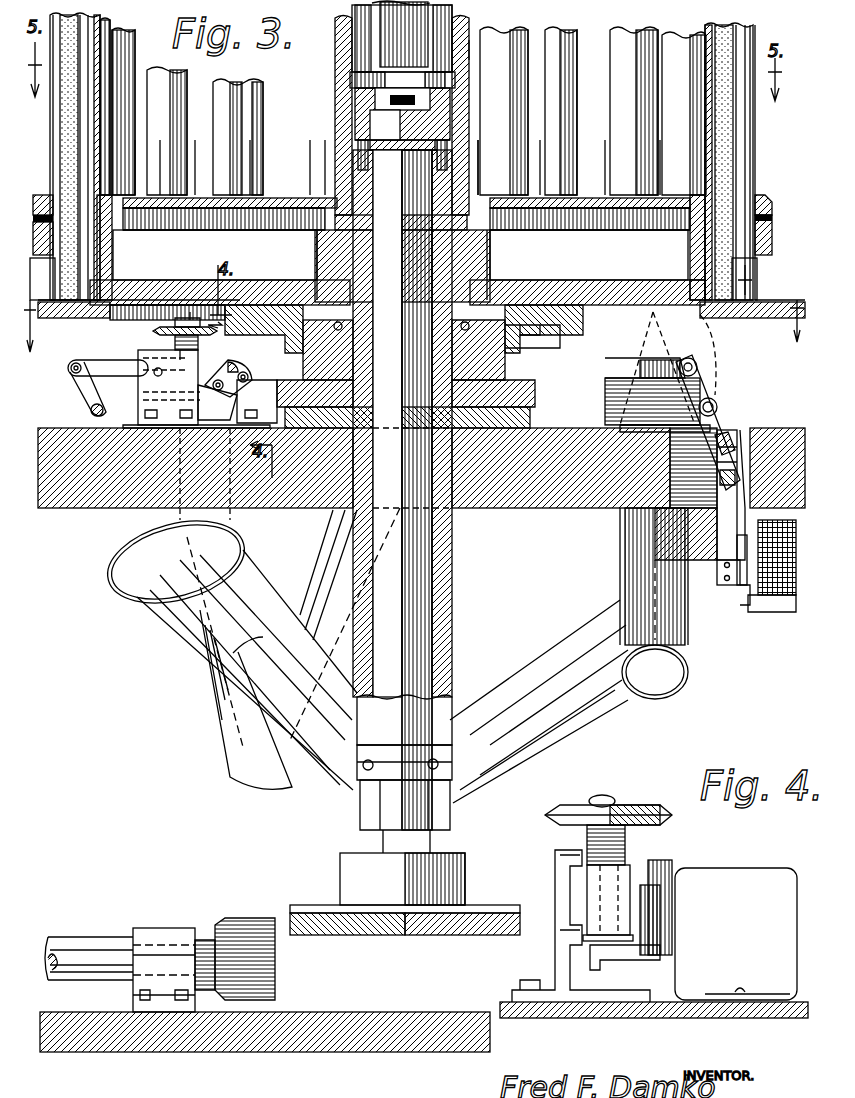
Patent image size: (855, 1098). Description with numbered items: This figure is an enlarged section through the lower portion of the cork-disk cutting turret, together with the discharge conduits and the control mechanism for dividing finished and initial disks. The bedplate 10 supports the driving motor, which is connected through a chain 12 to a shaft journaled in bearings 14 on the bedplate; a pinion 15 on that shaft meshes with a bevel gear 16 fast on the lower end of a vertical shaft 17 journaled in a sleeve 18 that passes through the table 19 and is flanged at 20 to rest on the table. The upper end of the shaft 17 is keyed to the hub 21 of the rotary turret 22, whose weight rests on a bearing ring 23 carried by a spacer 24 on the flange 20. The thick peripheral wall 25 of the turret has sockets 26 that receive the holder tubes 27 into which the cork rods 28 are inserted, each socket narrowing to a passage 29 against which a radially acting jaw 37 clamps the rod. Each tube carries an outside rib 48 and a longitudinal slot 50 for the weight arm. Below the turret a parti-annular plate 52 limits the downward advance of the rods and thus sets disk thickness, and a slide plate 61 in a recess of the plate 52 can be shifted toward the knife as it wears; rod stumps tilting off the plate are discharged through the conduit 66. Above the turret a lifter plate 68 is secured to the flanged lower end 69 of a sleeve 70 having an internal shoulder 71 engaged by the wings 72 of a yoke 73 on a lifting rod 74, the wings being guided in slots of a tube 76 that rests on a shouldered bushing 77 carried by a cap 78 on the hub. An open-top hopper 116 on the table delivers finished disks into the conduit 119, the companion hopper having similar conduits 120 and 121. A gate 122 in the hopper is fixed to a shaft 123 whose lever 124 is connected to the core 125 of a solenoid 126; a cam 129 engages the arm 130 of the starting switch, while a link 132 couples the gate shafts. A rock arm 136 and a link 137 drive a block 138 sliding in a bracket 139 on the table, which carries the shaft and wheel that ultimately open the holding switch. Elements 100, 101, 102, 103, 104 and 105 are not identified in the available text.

In FIG. 3, the bedplate 10 is at (236, 1050).
In FIG. 3, the chain 12 is at (419, 326).
In FIG. 3, the bearings 14 is at (138, 1002).
In FIG. 3, the pinion 15 is at (275, 965).
In FIG. 3, the bevel gear 16 is at (378, 935).
In FIG. 3, the vertical shaft 17 is at (430, 625).
In FIG. 3, the sleeve 18 is at (452, 554).
In FIG. 3, the table 19 is at (527, 495).
In FIG. 4, the table 19 is at (575, 1008).
In FIG. 3, the flange 20 is at (530, 418).
In FIG. 3, the hub 21 is at (480, 253).
In FIG. 3, the rotary turret 22 is at (618, 265).
In FIG. 3, the bearing ring 23 is at (500, 280).
In FIG. 3, the spacer 24 is at (500, 352).
In FIG. 3, the peripheral wall 25 is at (772, 238).
In FIG. 3, the sockets 26 is at (772, 205).
In FIG. 3, the holder tubes 27 is at (200, 118).
In FIG. 3, the cork rods 28 is at (66, 133).
In FIG. 3, the passage 29 is at (705, 280).
In FIG. 3, the jaw 37 is at (772, 278).
In FIG. 3, the outside rib 48 is at (308, 166).
In FIG. 3, the longitudinal slot 50 is at (754, 170).
In FIG. 3, the parti-annular plate 52 is at (421, 320).
In FIG. 3, the slide plate 61 is at (775, 330).
In FIG. 3, the conduit 66 is at (232, 728).
In FIG. 3, the lifter plate 68 is at (600, 212).
In FIG. 3, the flanged lower end 69 is at (315, 214).
In FIG. 3, the sleeve 70 is at (340, 92).
In FIG. 3, the internal annular shoulder 71 is at (465, 62).
In FIG. 3, the wings 72 is at (450, 80).
In FIG. 3, the yoke 73 is at (400, 68).
In FIG. 3, the lifting rod 74 is at (395, 30).
In FIG. 3, the tube 76 is at (388, 15).
In FIG. 3, the shouldered bushing 77 is at (425, 120).
In FIG. 3, the cap 78 is at (455, 160).
In FIG. 4, the spring 100 is at (625, 838).
In FIG. 4, the blade 101 is at (565, 832).
In FIG. 3, the screw blade 102 is at (170, 327).
In FIG. 4, the screw blade 102 is at (560, 810).
In FIG. 3, the bearing block 103 is at (255, 343).
In FIG. 3, the bracket 104 is at (205, 412).
In FIG. 4, the bracket 104 is at (620, 967).
In FIG. 3, the motor 105 is at (235, 390).
In FIG. 4, the motor 105 is at (752, 923).
In FIG. 3, the hopper 116 is at (648, 374).
In FIG. 3, the conduit 119 is at (568, 721).
In FIG. 3, the conduit 120 is at (755, 412).
In FIG. 3, the conduit 121 is at (348, 772).
In FIG. 3, the gate 122 is at (650, 338).
In FIG. 3, the shaft 123 is at (712, 400).
In FIG. 3, the lever 124 is at (720, 470).
In FIG. 3, the core 125 is at (740, 595).
In FIG. 3, the solenoid 126 is at (785, 612).
In FIG. 3, the cam 129 is at (620, 418).
In FIG. 3, the arm 130 is at (91, 410).
In FIG. 3, the link 132 is at (635, 385).
In FIG. 3, the rock arm 136 is at (76, 388).
In FIG. 3, the link 137 is at (110, 370).
In FIG. 3, the block 138 is at (165, 358).
In FIG. 4, the block 138 is at (631, 863).
In FIG. 3, the bracket 139 is at (148, 402).
In FIG. 4, the bracket 139 is at (558, 876).